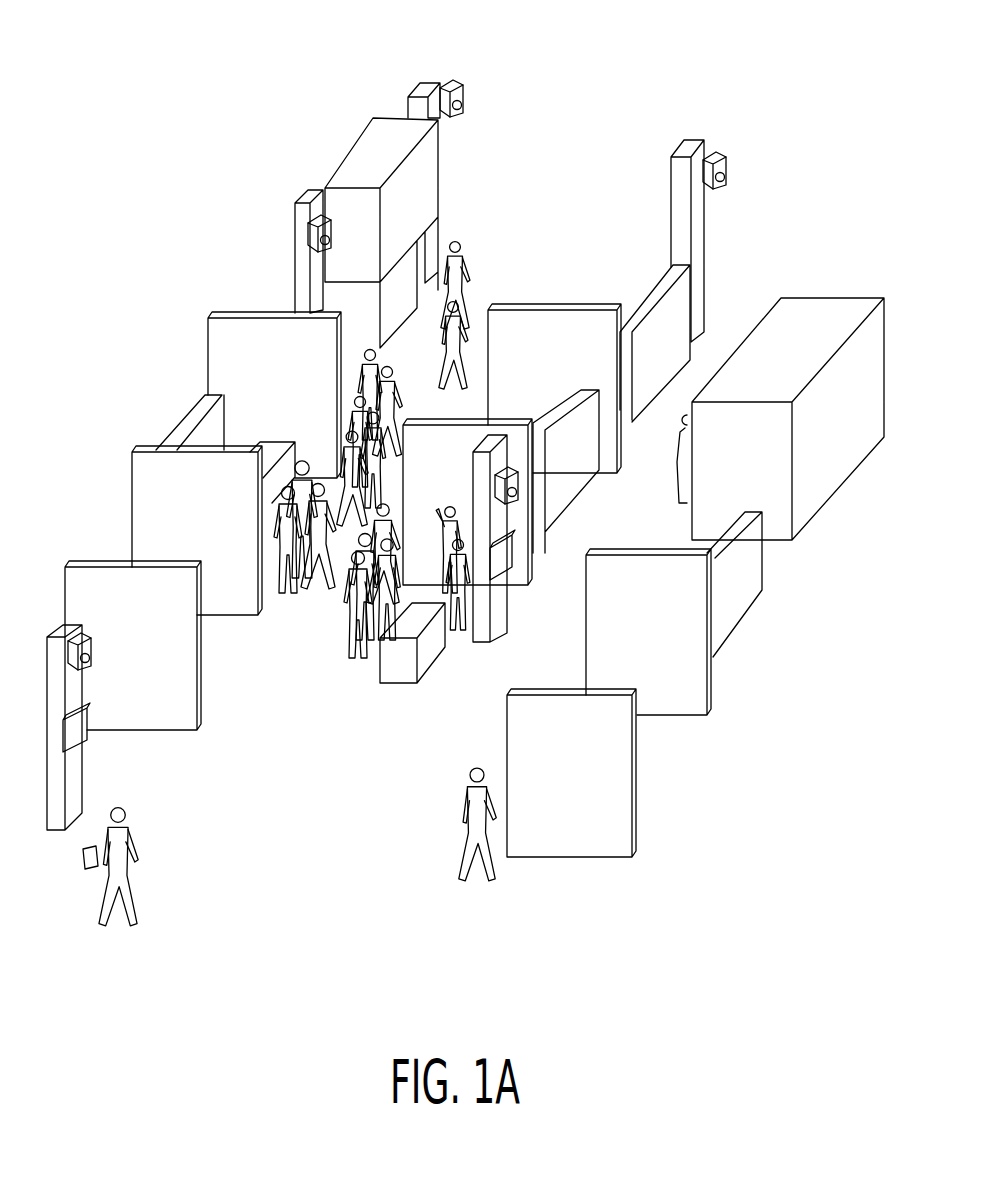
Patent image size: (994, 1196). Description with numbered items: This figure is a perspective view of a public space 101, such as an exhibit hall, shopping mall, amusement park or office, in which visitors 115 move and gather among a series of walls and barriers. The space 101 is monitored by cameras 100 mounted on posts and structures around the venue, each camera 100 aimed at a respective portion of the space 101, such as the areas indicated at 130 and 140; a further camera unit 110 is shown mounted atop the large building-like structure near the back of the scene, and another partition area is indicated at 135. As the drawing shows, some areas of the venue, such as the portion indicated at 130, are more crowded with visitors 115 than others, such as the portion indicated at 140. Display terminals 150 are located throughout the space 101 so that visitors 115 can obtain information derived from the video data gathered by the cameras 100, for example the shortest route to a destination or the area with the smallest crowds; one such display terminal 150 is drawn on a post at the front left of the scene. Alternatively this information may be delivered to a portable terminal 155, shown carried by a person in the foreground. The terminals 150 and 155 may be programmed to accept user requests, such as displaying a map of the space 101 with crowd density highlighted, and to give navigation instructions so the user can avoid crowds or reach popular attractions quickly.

The camera 100 is at (302, 233).
The camera unit on building 110 is at (407, 108).
The visitors 115 is at (470, 243).
The portion of the space 130 is at (315, 645).
The second area 135 is at (553, 381).
The portion of the space 140 is at (571, 649).
The display terminal 150 is at (88, 734).
The portable terminal 155 is at (82, 868).
The space 101 is at (360, 899).